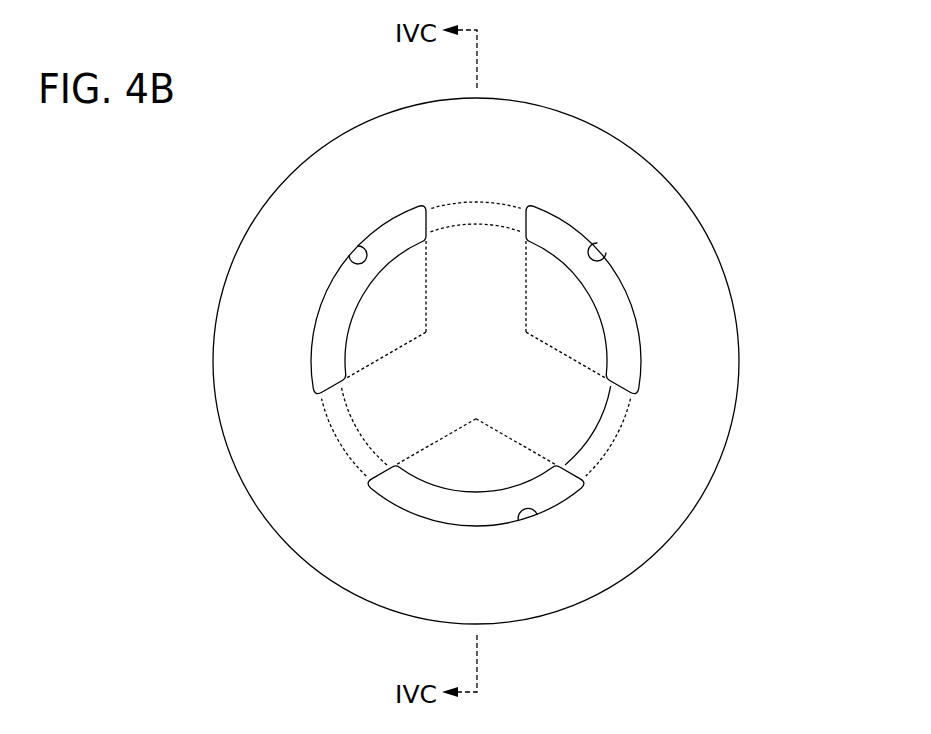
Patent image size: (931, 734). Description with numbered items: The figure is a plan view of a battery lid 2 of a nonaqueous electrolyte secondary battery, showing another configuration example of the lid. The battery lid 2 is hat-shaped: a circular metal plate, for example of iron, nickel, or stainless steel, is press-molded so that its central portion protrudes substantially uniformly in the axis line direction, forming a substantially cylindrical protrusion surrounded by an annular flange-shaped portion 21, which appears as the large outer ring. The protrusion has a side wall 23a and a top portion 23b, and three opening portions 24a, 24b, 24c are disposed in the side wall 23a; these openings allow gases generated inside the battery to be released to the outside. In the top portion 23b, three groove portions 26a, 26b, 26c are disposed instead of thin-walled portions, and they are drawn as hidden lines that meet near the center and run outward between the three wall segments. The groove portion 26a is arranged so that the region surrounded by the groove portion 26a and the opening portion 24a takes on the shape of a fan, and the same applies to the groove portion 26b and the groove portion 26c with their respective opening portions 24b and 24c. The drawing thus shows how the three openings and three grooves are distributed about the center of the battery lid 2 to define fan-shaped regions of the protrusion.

The battery lid 2 is at (148, 157).
The annular flange-shaped portion 21 is at (708, 351).
The side wall 23a is at (585, 457).
The top portion 23b is at (587, 408).
The opening portion 24a is at (542, 513).
The opening portion 24b is at (592, 250).
The opening portion 24c is at (345, 262).
The groove portion 26a is at (430, 452).
The groove portion 26b is at (567, 355).
The groove portion 26c is at (386, 351).